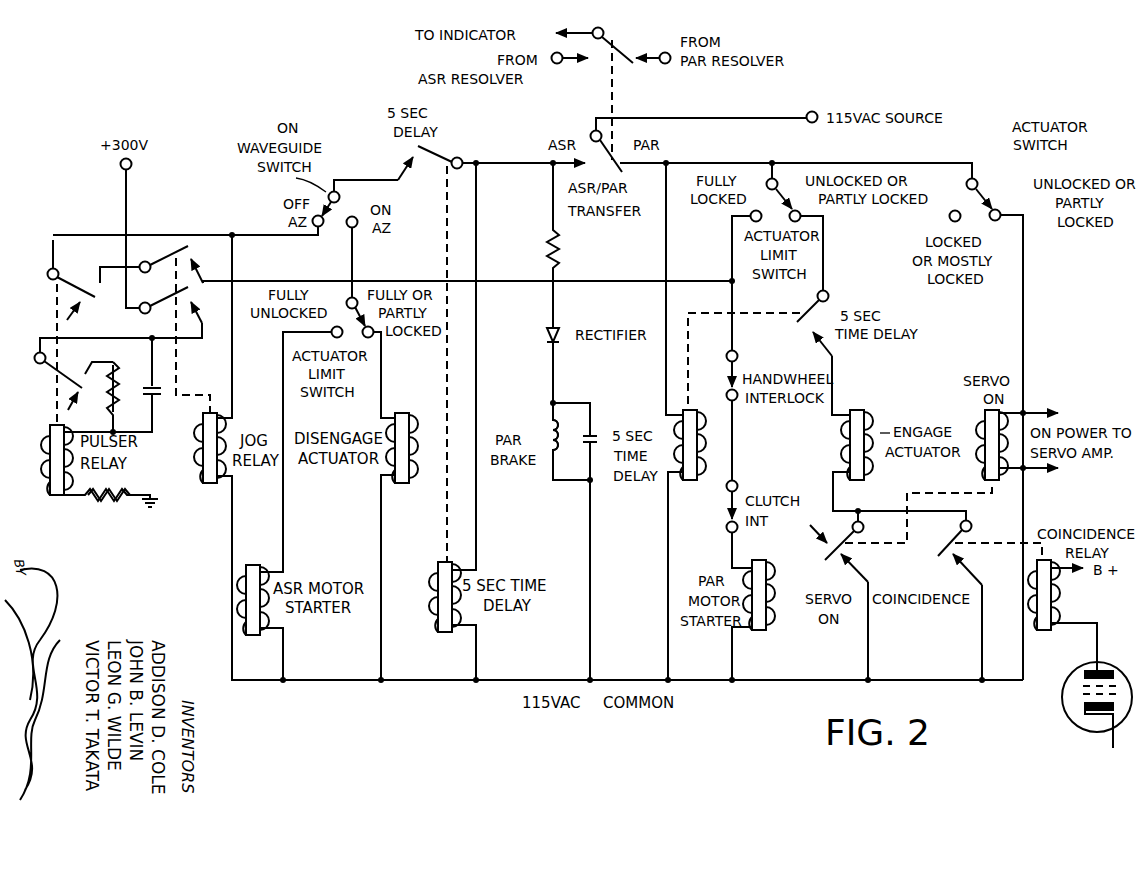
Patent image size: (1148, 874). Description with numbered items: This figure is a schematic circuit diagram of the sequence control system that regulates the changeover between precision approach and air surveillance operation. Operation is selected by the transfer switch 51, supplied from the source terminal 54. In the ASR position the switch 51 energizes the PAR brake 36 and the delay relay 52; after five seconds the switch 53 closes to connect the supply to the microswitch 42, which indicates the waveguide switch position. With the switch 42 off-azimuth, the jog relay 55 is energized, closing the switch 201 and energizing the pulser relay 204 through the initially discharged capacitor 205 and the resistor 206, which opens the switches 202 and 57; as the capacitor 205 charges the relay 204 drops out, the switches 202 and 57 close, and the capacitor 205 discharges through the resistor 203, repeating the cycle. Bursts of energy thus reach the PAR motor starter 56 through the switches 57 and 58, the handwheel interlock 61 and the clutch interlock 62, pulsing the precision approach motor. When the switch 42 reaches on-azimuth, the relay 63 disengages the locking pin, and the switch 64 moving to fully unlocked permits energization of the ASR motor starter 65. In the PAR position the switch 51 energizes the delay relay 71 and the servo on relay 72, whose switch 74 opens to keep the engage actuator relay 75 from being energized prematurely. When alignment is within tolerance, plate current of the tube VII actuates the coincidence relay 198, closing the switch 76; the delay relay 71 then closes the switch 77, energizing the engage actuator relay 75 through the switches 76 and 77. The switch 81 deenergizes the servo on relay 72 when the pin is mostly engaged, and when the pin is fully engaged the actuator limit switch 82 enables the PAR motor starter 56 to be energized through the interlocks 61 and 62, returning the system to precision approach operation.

The switch 57 is at (60, 280).
The switch 58 is at (182, 250).
The switch 201 is at (186, 300).
The switch 202 is at (63, 368).
The resistor 203 is at (126, 386).
The pulser relay 204 is at (58, 505).
The capacitor 205 is at (160, 398).
The resistor 206 is at (100, 505).
The jog relay 55 is at (210, 490).
The ASR motor starter 65 is at (250, 562).
The microswitch 42 is at (350, 196).
The switch 53 is at (465, 153).
The switch 64 is at (347, 297).
The relay 63 is at (404, 410).
The delay relay 52 is at (438, 560).
The switch 51 is at (589, 130).
The terminal 54 is at (812, 110).
The PAR brake 36 is at (560, 444).
The delay relay 71 is at (690, 485).
The handwheel interlock 61 is at (725, 378).
The clutch interlock 62 is at (738, 493).
The PAR motor starter 56 is at (757, 636).
The actuator limit switch 82 is at (767, 177).
The switch 77 is at (831, 307).
The engage actuator relay 75 is at (864, 410).
The switch 74 is at (825, 553).
The switch 76 is at (937, 558).
The switch 81 is at (978, 192).
The servo on relay 72 is at (985, 415).
The coincidence relay 198 is at (1062, 610).
The tube VII is at (1108, 658).